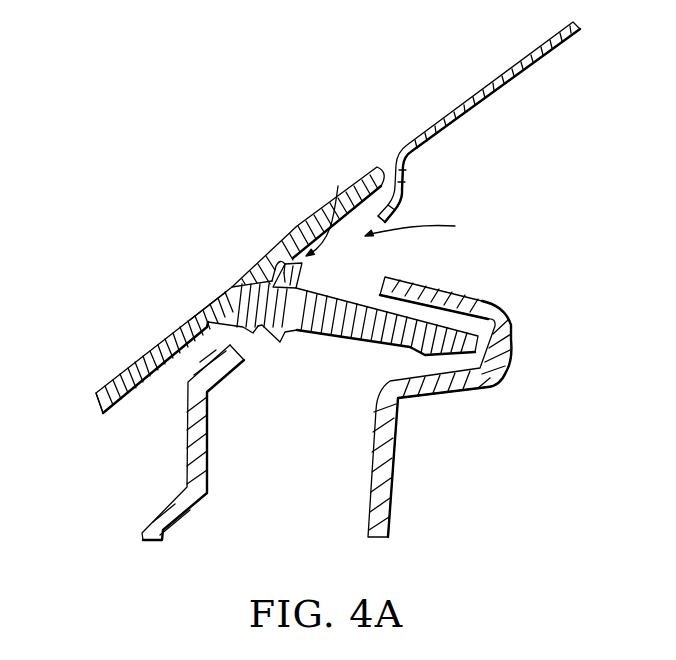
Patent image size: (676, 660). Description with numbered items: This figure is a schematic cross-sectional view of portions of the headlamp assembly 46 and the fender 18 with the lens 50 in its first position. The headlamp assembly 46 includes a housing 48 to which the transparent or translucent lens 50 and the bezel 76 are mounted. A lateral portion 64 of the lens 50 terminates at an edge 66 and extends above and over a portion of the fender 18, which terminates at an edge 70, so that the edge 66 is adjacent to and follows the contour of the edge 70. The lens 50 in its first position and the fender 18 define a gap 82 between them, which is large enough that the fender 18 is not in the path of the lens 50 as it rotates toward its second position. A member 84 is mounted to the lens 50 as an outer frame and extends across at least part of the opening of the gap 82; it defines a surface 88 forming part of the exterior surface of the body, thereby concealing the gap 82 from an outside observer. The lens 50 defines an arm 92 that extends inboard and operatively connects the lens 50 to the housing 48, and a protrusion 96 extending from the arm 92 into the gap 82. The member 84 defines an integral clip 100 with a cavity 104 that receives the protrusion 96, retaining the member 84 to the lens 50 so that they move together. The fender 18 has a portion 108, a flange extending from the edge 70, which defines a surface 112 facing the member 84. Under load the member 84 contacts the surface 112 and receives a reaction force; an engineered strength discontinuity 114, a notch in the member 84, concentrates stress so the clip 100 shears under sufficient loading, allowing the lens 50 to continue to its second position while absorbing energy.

The fender 18 is at (483, 83).
The headlamp assembly 46 is at (534, 320).
The housing 48 is at (502, 382).
The lens 50 is at (110, 378).
The lateral portion 64 is at (152, 335).
The edge 66 is at (220, 283).
The edge 70 is at (395, 162).
The bezel 76 is at (208, 440).
The gap 82 is at (423, 225).
The member 84 is at (328, 216).
The surface 88 is at (274, 262).
The arm 92 is at (345, 343).
The protrusion 96 is at (288, 336).
The clip 100 is at (306, 280).
The cavity 104 is at (277, 272).
The portion 108 is at (398, 208).
The surface 112 is at (372, 172).
The engineered strength discontinuity 114 is at (331, 209).